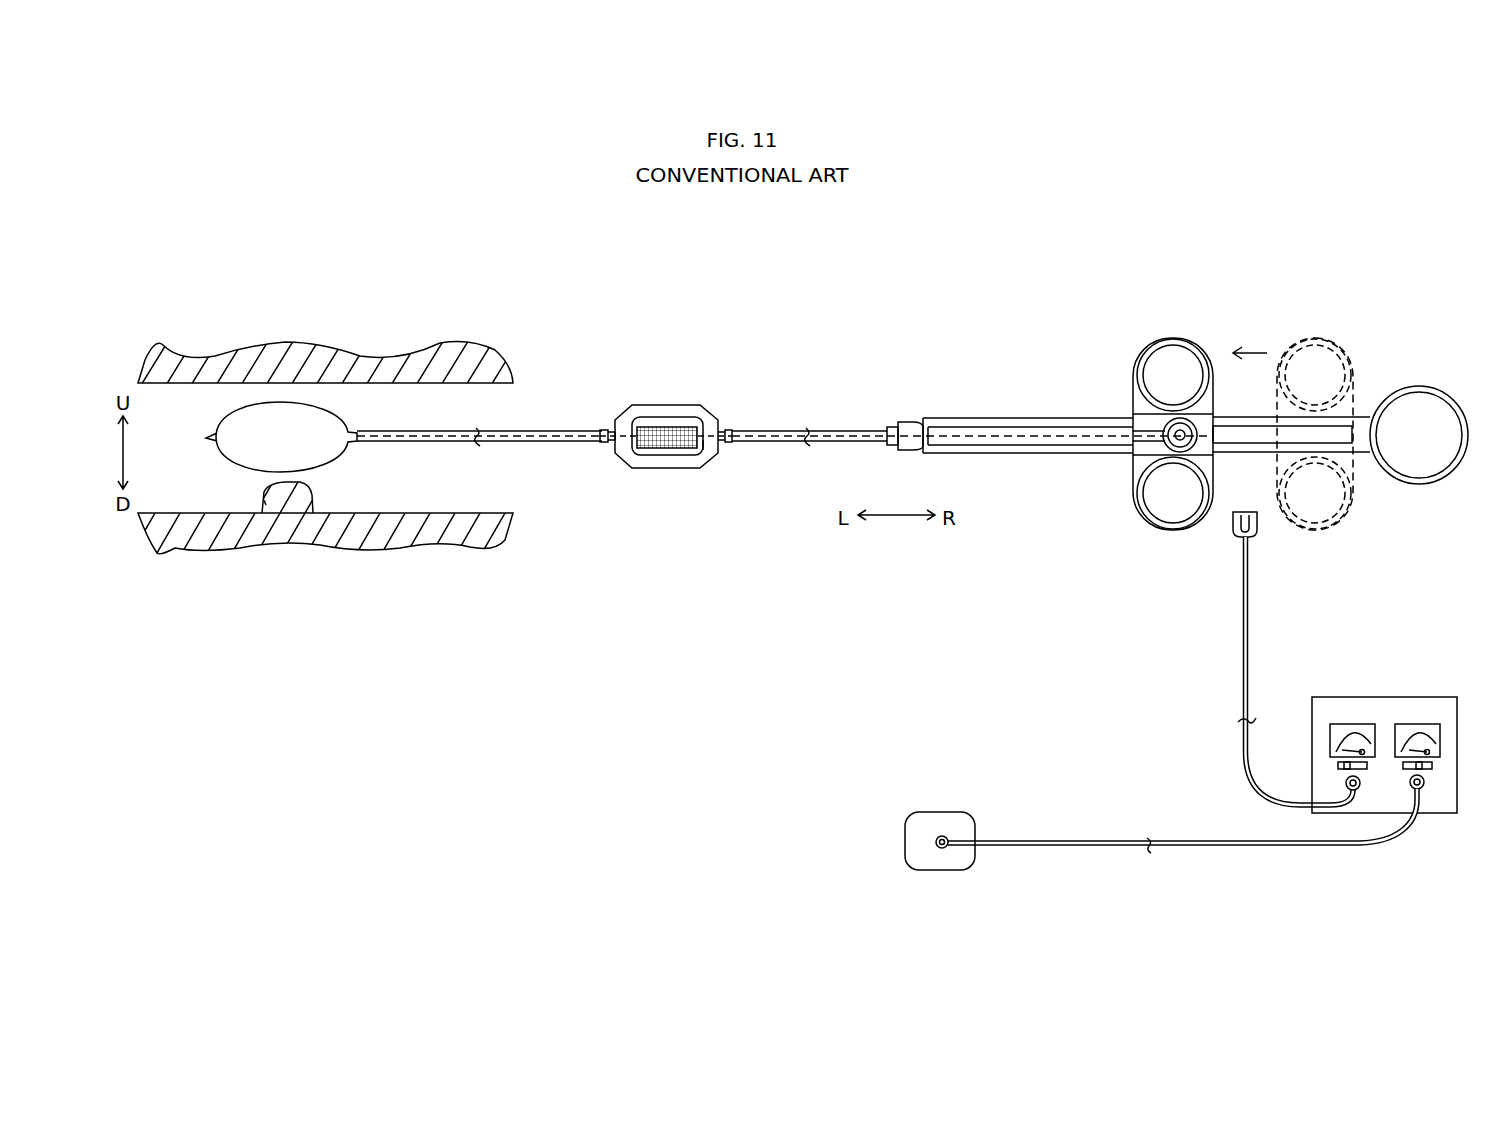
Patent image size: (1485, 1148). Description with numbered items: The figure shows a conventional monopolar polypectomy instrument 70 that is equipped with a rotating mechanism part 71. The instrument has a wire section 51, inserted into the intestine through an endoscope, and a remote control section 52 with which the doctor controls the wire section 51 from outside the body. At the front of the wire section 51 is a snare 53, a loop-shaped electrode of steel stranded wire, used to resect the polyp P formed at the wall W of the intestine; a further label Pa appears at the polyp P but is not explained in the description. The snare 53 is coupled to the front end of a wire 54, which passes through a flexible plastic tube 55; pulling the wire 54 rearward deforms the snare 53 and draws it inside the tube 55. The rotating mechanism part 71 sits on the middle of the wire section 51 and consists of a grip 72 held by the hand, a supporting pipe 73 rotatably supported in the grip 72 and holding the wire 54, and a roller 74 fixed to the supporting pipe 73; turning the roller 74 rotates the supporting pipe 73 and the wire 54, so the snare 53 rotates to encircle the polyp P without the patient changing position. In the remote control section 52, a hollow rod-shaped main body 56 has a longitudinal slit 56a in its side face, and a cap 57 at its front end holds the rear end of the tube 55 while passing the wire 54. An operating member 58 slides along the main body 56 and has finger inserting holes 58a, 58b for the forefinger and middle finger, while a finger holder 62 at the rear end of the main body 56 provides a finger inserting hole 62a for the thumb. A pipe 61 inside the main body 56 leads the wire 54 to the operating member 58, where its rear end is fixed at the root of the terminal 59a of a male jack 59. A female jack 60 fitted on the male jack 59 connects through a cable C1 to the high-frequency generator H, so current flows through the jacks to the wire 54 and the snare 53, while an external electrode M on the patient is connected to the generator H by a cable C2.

The polypectomy instrument 70 is at (881, 290).
The wire section 51 is at (207, 398).
The remote control section 52 is at (888, 330).
The snare 53 is at (337, 425).
The wire 54 is at (506, 430).
The tube 55 is at (575, 430).
The main body 56 is at (1050, 430).
The slit 56a is at (982, 429).
The cap 57 is at (912, 420).
The operating member 58 is at (1216, 435).
The finger inserting hole 58a is at (1150, 362).
The finger inserting hole 58b is at (1150, 505).
The male jack 59 is at (1217, 438).
The terminal 59a is at (1196, 446).
The female jack 60 is at (1259, 521).
The pipe 61 is at (950, 441).
The finger holder 62 is at (1340, 417).
The finger inserting hole 62a is at (1405, 405).
The rotating mechanism part 71 is at (680, 451).
The grip 72 is at (692, 412).
The supporting pipe 73 is at (701, 444).
The roller 74 is at (644, 448).
The wall W is at (163, 513).
The polyp P is at (259, 486).
The lesion base Pa is at (262, 504).
The high-frequency generator H is at (1383, 697).
The external electrode M is at (905, 836).
The cable C1 is at (1250, 612).
The cable C2 is at (1077, 846).